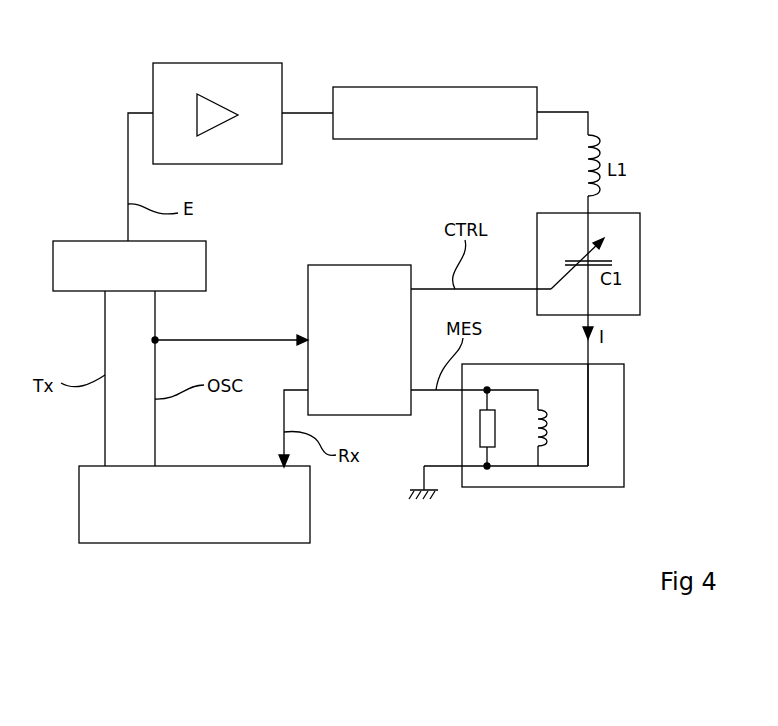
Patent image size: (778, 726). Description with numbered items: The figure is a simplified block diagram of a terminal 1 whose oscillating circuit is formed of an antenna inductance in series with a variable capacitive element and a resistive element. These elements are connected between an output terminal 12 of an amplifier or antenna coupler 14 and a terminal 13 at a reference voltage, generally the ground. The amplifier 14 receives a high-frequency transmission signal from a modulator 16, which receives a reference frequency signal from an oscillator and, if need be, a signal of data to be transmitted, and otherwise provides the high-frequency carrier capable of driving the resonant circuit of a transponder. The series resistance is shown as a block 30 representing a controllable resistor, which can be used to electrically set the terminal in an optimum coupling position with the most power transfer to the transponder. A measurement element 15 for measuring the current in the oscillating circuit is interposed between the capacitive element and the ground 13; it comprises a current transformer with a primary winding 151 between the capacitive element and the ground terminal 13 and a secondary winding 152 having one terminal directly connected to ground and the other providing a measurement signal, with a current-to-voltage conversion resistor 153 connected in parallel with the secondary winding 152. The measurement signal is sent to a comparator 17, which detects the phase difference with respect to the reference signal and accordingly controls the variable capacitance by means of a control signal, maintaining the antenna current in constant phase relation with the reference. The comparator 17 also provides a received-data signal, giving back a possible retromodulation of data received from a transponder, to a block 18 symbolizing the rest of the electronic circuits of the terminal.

The terminal 1 is at (243, 642).
The output terminal 12 is at (300, 113).
The terminal at a reference voltage 13 is at (424, 480).
The amplifier or antenna coupler 14 is at (193, 63).
The element for measuring the current 15 is at (545, 425).
The modulator 16 is at (206, 263).
The comparator 17 is at (360, 265).
The block symbolizing the rest of the electronic circuits 18 is at (172, 543).
The controllable R1 block 30 is at (430, 87).
The primary winding 151 is at (589, 405).
The secondary winding 152 is at (546, 413).
The current-to-voltage conversion resistor 153 is at (495, 440).